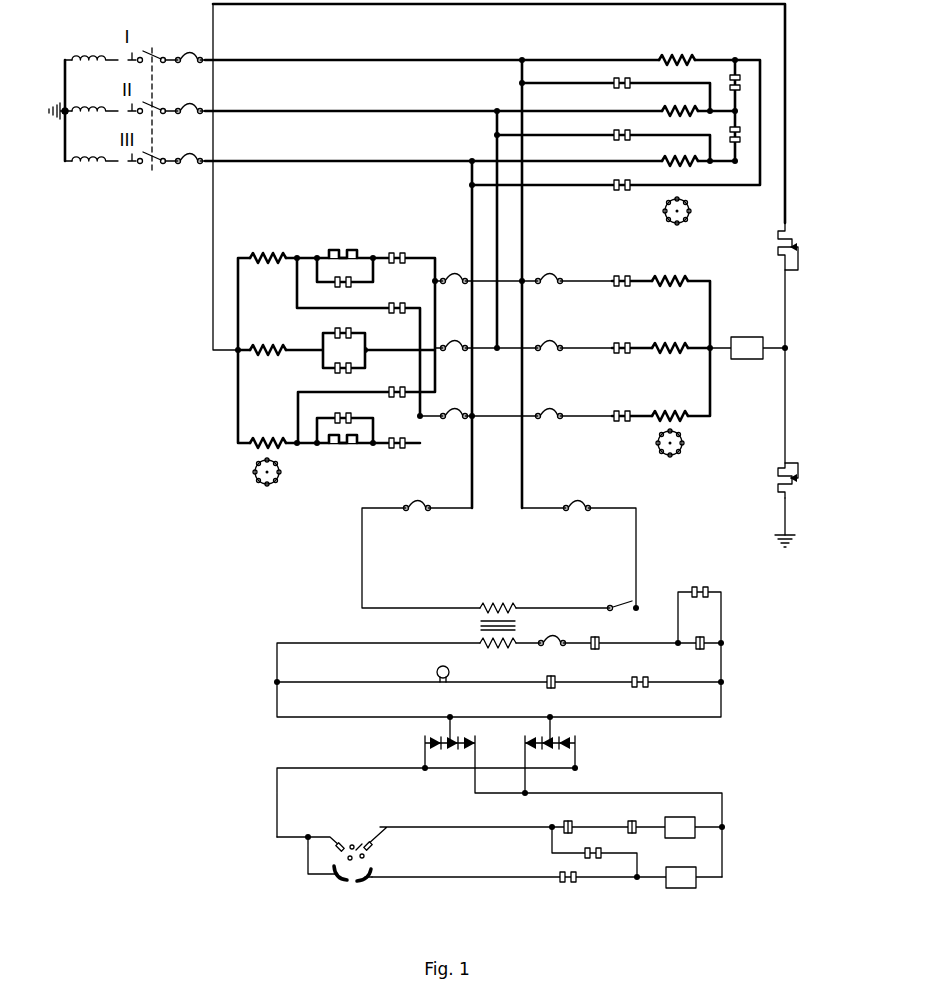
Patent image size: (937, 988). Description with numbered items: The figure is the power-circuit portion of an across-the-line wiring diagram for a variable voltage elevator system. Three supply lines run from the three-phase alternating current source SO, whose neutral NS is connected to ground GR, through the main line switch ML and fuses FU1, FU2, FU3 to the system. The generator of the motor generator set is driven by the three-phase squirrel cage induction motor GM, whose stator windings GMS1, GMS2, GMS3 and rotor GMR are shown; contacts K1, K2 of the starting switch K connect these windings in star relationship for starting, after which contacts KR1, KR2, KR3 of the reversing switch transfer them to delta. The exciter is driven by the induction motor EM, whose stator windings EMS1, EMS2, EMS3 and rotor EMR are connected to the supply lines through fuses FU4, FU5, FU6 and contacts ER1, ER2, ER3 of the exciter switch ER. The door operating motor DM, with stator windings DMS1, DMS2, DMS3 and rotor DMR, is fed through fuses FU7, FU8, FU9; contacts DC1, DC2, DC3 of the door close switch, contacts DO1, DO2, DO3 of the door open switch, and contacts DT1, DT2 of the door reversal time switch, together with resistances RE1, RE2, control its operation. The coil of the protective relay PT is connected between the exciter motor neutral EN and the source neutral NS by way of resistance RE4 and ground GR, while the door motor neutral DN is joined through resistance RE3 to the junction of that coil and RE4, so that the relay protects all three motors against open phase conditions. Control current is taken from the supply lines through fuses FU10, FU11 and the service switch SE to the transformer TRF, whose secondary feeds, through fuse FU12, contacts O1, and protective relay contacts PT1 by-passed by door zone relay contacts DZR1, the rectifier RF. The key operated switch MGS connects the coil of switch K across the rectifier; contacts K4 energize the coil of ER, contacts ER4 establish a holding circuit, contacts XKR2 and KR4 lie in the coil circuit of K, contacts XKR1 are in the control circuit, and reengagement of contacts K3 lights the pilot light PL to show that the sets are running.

The three-phase alternating current source SO is at (80, 46).
The ground GR is at (50, 100).
The neutral NS is at (67, 109).
The main line switch ML is at (153, 47).
The fuse FU1 is at (186, 46).
The fuse FU2 is at (186, 97).
The fuse FU3 is at (186, 147).
The fuse FU4 is at (560, 271).
The fuse FU5 is at (560, 338).
The fuse FU6 is at (560, 406).
The fuse FU7 is at (455, 271).
The fuse FU8 is at (455, 338).
The fuse FU9 is at (455, 406).
The fuse FU10 is at (423, 497).
The fuse FU11 is at (582, 497).
The fuse FU12 is at (553, 630).
The stator winding of generator driving motor GMS1 is at (687, 45).
The stator winding of generator driving motor GMS2 is at (690, 100).
The stator winding of generator driving motor GMS3 is at (690, 151).
The contacts of reversing switch KR1 is at (613, 82).
The contacts of reversing switch KR2 is at (613, 134).
The contacts of reversing switch KR3 is at (613, 184).
The contacts of starting switch K1 is at (740, 88).
The contacts of starting switch K2 is at (740, 140).
The generator driving motor GM is at (734, 212).
The rotor of generator driving motor GMR is at (664, 221).
The resistance RE3 is at (778, 242).
The resistance RE4 is at (778, 486).
The neutral of door motor DN is at (237, 348).
The door operating motor DM is at (198, 406).
The stator winding of door operating motor DMS1 is at (267, 242).
The stator winding of door operating motor DMS2 is at (268, 337).
The stator winding of door operating motor DMS3 is at (268, 429).
The resistance RE1 is at (343, 249).
The resistance RE2 is at (343, 447).
The contacts of door open switch DO1 is at (398, 252).
The contacts of door open switch DO2 is at (344, 348).
The contacts of door open switch DO3 is at (397, 441).
The contacts of door reversal time switch DT1 is at (341, 288).
The contacts of door reversal time switch DT2 is at (349, 417).
The contacts of door close switch DC1 is at (403, 296).
The contacts of door close switch DC2 is at (341, 372).
The contacts of door close switch DC3 is at (399, 381).
The rotor of door operating motor DMR is at (265, 486).
The contacts of exciter switch ER1 is at (622, 289).
The contacts of exciter switch ER2 is at (622, 356).
The contacts of exciter switch ER3 is at (622, 424).
The stator winding of exciter driving motor EMS1 is at (676, 268).
The stator winding of exciter driving motor EMS2 is at (676, 335).
The stator winding of exciter driving motor EMS3 is at (676, 402).
The exciter driving motor EM is at (726, 299).
The neutral of exciter motor EN is at (713, 346).
The protective relay PT is at (747, 348).
The rotor of exciter driving motor EMR is at (667, 457).
The transformer TRF is at (498, 611).
The service switch SE is at (630, 605).
The contacts of door zone relay DZR1 is at (702, 589).
The contacts of switch O O1 is at (597, 638).
The contacts of protective relay PT1 is at (701, 637).
The pilot light PL is at (436, 672).
The contacts of starting switch K3 is at (553, 676).
The contacts of relay XKR XKR1 is at (640, 677).
The rectifier RF is at (500, 743).
The contacts of relay XKR XKR2 is at (569, 821).
The contacts of reversing switch KR4 is at (633, 821).
The starting switch K is at (680, 827).
The contacts of starting switch K4 is at (594, 852).
The key operated switch MGS is at (376, 860).
The contacts of exciter switch ER4 is at (572, 884).
The exciter switch ER is at (681, 877).